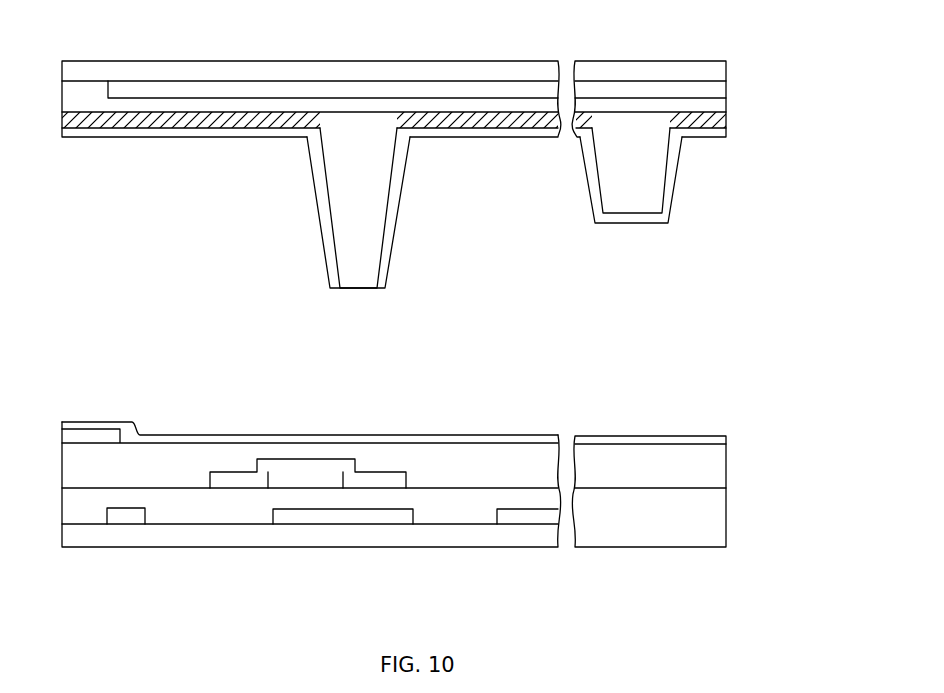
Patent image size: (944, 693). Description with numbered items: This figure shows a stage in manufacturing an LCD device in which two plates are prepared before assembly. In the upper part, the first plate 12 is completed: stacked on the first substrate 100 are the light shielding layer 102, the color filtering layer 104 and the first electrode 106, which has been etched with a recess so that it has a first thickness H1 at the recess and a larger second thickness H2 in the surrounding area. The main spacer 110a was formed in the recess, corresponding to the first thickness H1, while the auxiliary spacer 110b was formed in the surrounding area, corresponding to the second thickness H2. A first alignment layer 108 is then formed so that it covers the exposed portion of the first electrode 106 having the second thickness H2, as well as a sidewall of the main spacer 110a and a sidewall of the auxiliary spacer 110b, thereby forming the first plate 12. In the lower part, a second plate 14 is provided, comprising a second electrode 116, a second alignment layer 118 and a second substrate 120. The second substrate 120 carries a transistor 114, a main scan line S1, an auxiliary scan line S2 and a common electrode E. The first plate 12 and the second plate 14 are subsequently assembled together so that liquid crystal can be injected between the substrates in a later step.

The first plate 12 is at (822, 10).
The first substrate 100 is at (713, 72).
The light shielding layer 102 is at (717, 90).
The color filtering layer 104 is at (717, 105).
The first electrode 106 is at (717, 120).
The first alignment layer 108 is at (717, 133).
The main spacer 110a is at (362, 205).
The auxiliary spacer 110b is at (647, 188).
The first thickness H1 is at (361, 145).
The second thickness H2 is at (171, 145).
The second plate 14 is at (818, 373).
The transistor 114 is at (228, 463).
The second electrode 116 is at (103, 437).
The second alignment layer 118 is at (727, 440).
The second substrate 120 is at (726, 444).
The common electrode E is at (123, 518).
The main scan line S1 is at (347, 517).
The auxiliary scan line S2 is at (530, 517).